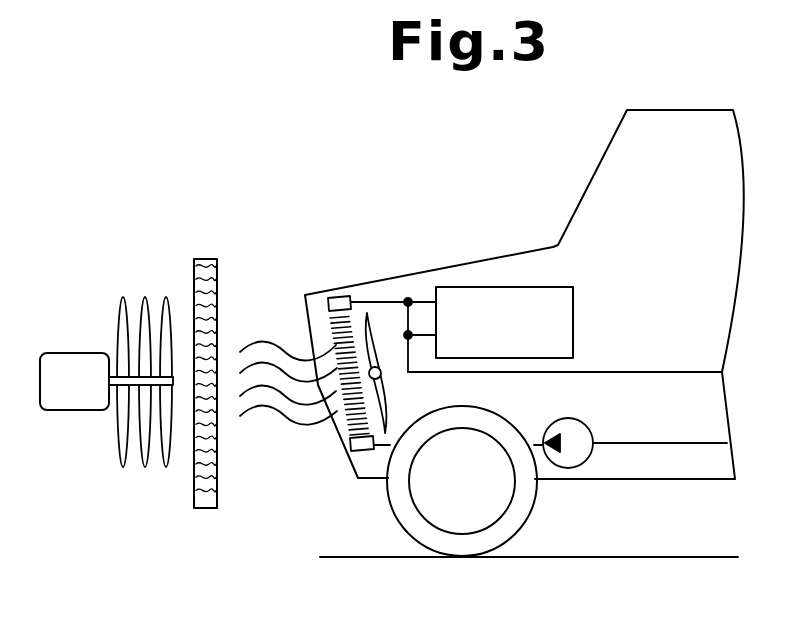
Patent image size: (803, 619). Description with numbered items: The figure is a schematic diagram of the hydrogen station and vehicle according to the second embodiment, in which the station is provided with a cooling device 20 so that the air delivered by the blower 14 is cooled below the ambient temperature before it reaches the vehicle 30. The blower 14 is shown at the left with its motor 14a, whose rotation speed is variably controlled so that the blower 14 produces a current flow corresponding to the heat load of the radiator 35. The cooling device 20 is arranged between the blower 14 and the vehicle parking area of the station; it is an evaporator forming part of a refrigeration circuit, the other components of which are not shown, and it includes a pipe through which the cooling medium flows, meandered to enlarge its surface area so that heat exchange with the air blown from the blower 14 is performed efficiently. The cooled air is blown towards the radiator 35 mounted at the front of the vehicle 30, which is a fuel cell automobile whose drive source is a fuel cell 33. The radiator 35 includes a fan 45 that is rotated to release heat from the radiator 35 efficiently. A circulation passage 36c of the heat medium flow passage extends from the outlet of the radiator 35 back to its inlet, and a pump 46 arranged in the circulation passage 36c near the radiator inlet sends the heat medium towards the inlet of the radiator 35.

The blower 14 is at (127, 268).
The motor 14a is at (75, 370).
The cooling device 20 is at (207, 509).
The vehicle 30 is at (598, 165).
The fuel cell 33 is at (573, 320).
The radiator 35 is at (338, 293).
The fan 45 is at (377, 318).
The pump 46 is at (592, 427).
The circulation passage 36c is at (684, 443).